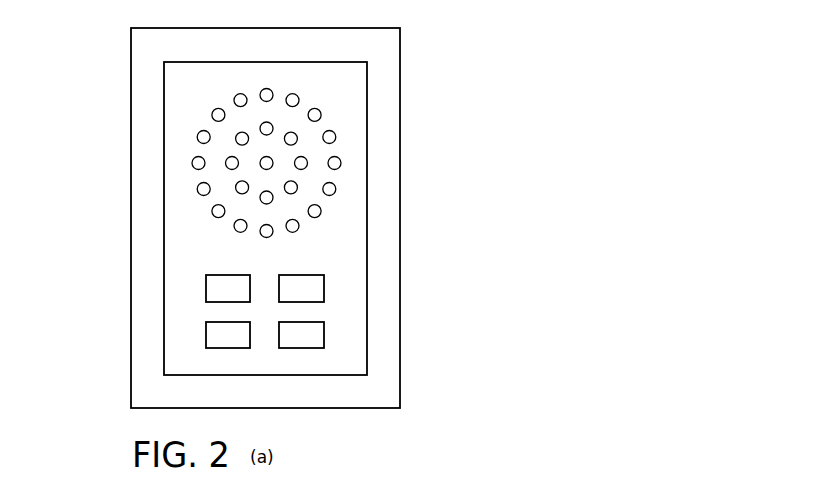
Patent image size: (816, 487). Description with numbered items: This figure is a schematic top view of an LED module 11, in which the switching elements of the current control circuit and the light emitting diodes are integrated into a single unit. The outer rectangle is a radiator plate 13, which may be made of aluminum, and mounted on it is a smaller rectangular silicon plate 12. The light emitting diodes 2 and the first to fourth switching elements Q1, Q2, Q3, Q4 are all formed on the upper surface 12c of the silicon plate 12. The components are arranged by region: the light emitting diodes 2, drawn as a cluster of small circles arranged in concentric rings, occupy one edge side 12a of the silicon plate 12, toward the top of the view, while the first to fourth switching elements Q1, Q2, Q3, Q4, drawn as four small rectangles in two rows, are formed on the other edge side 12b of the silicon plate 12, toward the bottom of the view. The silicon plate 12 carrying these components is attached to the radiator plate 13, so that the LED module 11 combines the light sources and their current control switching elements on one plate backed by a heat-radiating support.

The LED module 11 is at (462, 49).
The radiator plate 13 is at (401, 44).
The silicon plate 12 is at (350, 227).
The one edge side 12a is at (358, 99).
The other edge side 12b is at (352, 310).
The upper surface 12c is at (173, 228).
The light emitting diodes 2 is at (193, 160).
The first switching element Q1 is at (205, 280).
The second switching element Q2 is at (206, 335).
The third switching element Q3 is at (324, 283).
The fourth switching element Q4 is at (324, 335).